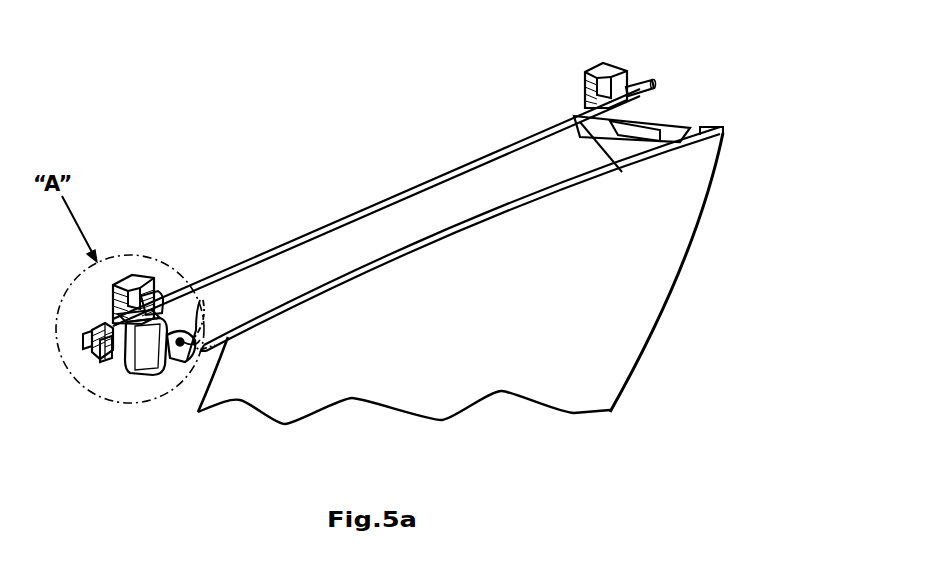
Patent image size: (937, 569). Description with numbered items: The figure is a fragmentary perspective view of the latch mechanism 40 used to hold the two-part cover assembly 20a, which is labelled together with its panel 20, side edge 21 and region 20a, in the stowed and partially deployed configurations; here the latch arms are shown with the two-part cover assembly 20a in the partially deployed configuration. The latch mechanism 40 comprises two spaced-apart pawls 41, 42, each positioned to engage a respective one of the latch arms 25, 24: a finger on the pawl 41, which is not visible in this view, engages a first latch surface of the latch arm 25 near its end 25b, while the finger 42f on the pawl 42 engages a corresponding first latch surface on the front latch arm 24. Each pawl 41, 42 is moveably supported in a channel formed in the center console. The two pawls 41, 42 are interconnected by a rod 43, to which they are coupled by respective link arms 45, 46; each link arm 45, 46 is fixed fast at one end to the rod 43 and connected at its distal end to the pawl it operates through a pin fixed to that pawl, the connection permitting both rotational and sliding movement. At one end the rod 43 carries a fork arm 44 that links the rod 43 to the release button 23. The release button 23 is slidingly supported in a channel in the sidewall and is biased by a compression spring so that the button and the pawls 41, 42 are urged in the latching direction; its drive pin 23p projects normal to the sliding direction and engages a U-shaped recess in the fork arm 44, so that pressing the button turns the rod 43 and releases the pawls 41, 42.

The protective device panel 20 is at (734, 199).
The two-part cover assembly 20a is at (658, 360).
The panel side edge 21 is at (674, 272).
The front latch arm 24 is at (672, 130).
The latch mechanism 40 is at (364, 100).
The rod 43 is at (376, 200).
The pawl 41 is at (138, 273).
The link arm 45 is at (157, 295).
The fork arm 44 is at (100, 343).
The release button 23 is at (147, 387).
The drive pin 23p is at (102, 357).
The latch arm 25 is at (187, 360).
The hook end 25b is at (203, 300).
The pawl 42 is at (586, 80).
The finger 42f is at (608, 124).
The link arm 46 is at (631, 84).